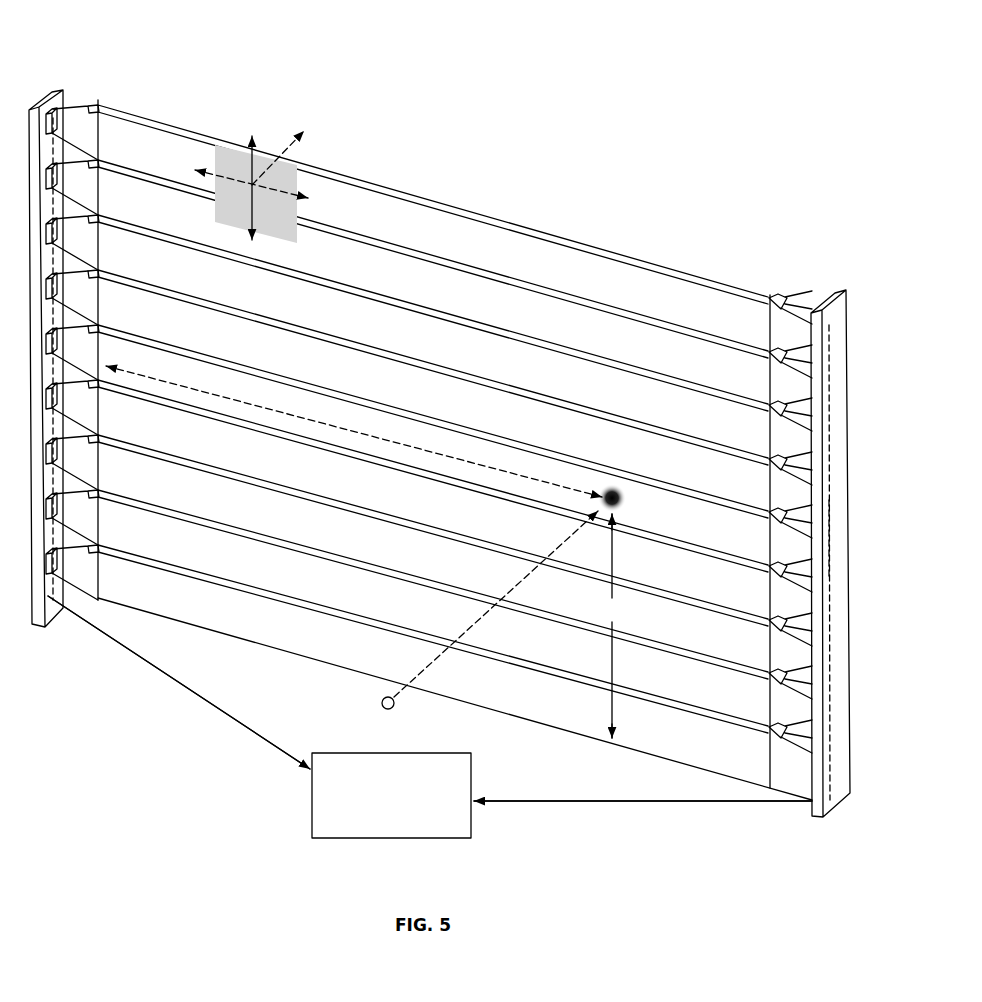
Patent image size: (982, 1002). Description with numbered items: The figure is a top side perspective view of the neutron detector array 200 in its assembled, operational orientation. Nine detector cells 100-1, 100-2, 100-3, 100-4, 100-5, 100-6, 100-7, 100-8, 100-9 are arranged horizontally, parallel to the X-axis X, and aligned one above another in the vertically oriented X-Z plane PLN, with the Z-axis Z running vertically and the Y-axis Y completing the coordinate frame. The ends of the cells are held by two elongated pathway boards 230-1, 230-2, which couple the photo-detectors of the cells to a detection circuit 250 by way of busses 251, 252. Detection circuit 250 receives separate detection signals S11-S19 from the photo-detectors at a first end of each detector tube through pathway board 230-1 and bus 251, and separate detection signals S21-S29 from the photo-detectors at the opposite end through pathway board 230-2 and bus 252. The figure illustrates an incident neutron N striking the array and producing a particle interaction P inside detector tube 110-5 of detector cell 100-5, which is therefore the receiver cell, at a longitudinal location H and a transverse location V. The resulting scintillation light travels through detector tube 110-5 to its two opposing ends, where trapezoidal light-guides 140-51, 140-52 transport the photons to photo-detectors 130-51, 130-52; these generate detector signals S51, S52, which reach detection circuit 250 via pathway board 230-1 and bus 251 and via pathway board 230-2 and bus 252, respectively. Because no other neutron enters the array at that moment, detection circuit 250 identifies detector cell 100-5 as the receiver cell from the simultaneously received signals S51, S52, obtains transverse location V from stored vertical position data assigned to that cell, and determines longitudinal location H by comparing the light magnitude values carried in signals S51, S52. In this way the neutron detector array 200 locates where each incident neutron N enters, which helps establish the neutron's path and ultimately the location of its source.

The neutron detector array 200 is at (619, 190).
The detector cell 100-1 is at (429, 214).
The detector cell 100-2 is at (429, 269).
The detector cell 100-3 is at (429, 323).
The detector cell 100-4 is at (450, 377).
The detector cell 100-5 is at (428, 429).
The detector cell 100-6 is at (429, 486).
The detector cell 100-7 is at (429, 540).
The detector cell 100-8 is at (429, 594).
The detector cell 100-9 is at (429, 649).
The detector tube 110-5 is at (477, 432).
The photo-detector 130-51 is at (61, 322).
The photo-detector 130-52 is at (821, 536).
The trapezoidal light-guide 140-51 is at (67, 277).
The trapezoidal light-guide 140-52 is at (794, 525).
The detector signal S51 is at (51, 372).
The detector signal S52 is at (838, 540).
The pathway board 230-1 is at (63, 616).
The pathway board 230-2 is at (816, 818).
The detection circuit 250 is at (391, 795).
The bus 251 is at (236, 724).
The bus 252 is at (598, 807).
The detection signals S11-S19 is at (179, 682).
The detection signals S21-S29 is at (643, 783).
The particle interaction P is at (607, 482).
The longitudinal location H is at (354, 431).
The transverse location V is at (608, 626).
The incident neutron N is at (399, 709).
The X-Z plane PLN is at (226, 157).
The X-axis X is at (264, 190).
The Y-axis Y is at (288, 157).
The Z-axis Z is at (243, 180).